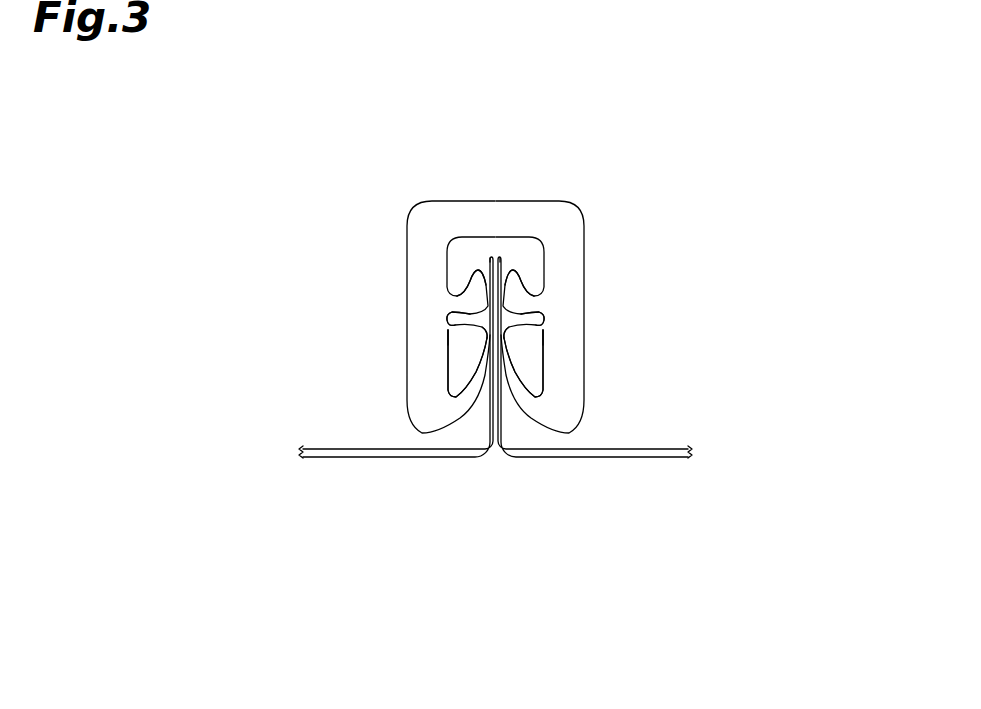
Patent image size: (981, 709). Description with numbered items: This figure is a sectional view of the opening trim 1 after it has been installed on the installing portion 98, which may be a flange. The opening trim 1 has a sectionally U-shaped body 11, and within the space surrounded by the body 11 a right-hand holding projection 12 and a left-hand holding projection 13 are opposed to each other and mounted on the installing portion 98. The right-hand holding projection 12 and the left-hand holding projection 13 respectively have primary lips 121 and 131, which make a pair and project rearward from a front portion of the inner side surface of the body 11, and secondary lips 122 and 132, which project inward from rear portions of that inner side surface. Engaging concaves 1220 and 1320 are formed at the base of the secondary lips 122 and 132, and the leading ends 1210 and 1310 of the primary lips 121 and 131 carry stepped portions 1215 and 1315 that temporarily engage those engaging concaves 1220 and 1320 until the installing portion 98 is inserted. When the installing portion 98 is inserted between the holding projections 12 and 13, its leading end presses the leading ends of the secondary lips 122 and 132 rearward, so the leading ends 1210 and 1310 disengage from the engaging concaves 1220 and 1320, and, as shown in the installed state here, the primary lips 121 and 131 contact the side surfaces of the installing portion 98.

The opening trim 1 is at (389, 189).
The body 11 is at (422, 263).
The right-hand holding projection 12 is at (539, 440).
The left-hand holding projection 13 is at (460, 440).
The installing portion 98 is at (502, 260).
The primary lip 121 is at (512, 370).
The secondary lip 122 is at (515, 287).
The primary lip 131 is at (473, 371).
The secondary lip 132 is at (473, 288).
The leading end 1210 is at (542, 333).
The stepped portion 1215 is at (505, 338).
The engaging concave 1220 is at (540, 322).
The leading end 1310 is at (448, 328).
The stepped portion 1315 is at (487, 334).
The engaging concave 1320 is at (450, 317).